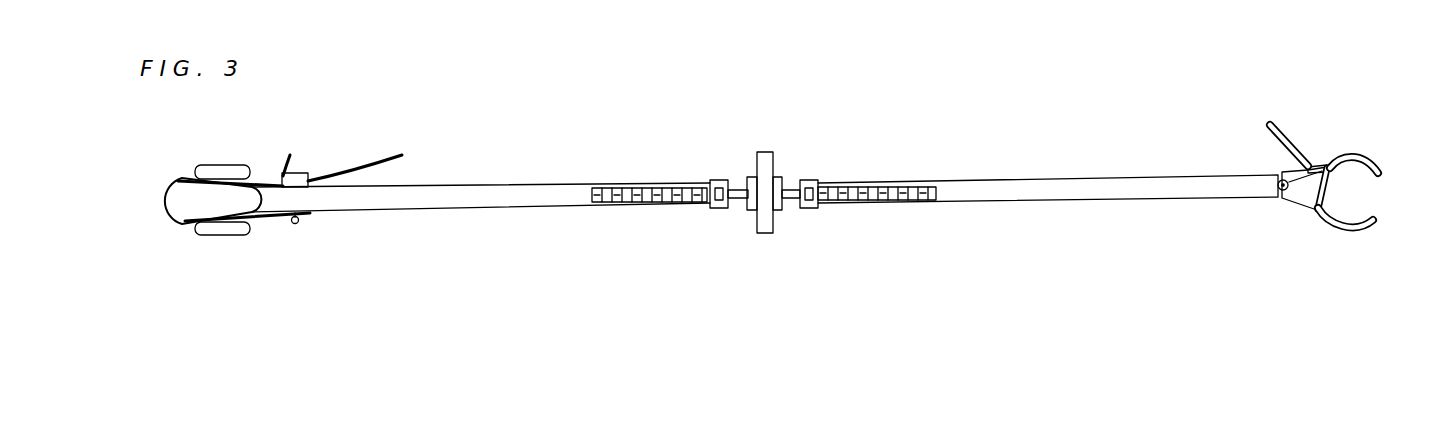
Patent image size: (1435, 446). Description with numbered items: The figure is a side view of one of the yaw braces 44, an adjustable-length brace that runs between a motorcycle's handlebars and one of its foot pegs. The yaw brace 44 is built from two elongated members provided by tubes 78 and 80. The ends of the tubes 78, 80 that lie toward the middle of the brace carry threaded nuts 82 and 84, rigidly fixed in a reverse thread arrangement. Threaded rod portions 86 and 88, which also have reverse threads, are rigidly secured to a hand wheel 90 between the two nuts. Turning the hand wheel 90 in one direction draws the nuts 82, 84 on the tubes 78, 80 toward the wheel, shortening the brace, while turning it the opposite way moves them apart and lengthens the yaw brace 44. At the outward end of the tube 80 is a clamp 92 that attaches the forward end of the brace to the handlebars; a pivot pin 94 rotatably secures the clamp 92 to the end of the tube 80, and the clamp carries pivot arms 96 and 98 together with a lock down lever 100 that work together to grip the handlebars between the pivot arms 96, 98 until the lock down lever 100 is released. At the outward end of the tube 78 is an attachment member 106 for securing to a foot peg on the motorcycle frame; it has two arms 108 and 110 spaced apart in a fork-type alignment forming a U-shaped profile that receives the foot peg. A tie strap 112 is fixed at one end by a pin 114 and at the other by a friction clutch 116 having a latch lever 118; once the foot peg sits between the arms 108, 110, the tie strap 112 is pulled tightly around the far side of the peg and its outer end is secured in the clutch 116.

The yaw brace 44 is at (578, 181).
The tube 78 is at (475, 209).
The tube 80 is at (1086, 200).
The threaded nut 82 is at (716, 180).
The threaded nut 84 is at (813, 180).
The threaded rod portion 86 is at (738, 200).
The threaded rod portion 88 is at (791, 200).
The hand wheel 90 is at (767, 152).
The clamp 92 is at (1300, 212).
The pivot pin 94 is at (1278, 185).
The pivot arm 96 is at (1365, 158).
The pivot arm 98 is at (1350, 234).
The lock down lever 100 is at (1283, 130).
The attachment member 106 is at (214, 242).
The arm 108 is at (240, 236).
The arm 110 is at (222, 167).
The tie strap 112 is at (162, 213).
The pin 114 is at (297, 226).
The friction clutch 116 is at (300, 173).
The latch lever 118 is at (285, 170).